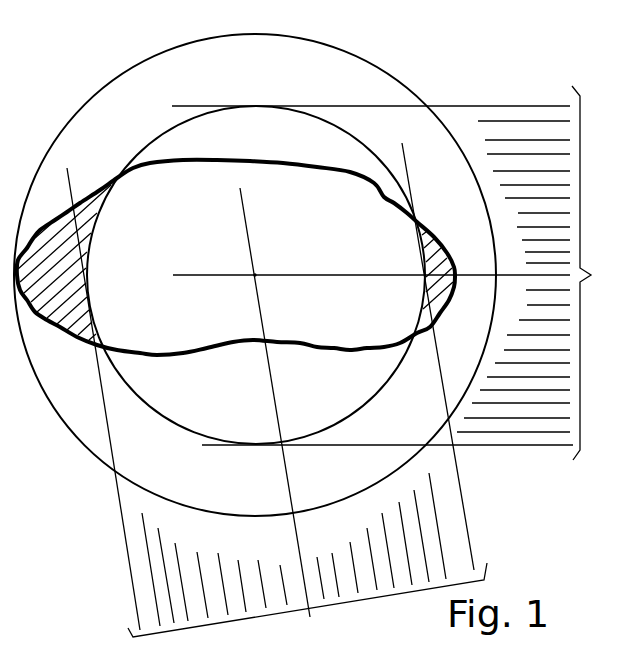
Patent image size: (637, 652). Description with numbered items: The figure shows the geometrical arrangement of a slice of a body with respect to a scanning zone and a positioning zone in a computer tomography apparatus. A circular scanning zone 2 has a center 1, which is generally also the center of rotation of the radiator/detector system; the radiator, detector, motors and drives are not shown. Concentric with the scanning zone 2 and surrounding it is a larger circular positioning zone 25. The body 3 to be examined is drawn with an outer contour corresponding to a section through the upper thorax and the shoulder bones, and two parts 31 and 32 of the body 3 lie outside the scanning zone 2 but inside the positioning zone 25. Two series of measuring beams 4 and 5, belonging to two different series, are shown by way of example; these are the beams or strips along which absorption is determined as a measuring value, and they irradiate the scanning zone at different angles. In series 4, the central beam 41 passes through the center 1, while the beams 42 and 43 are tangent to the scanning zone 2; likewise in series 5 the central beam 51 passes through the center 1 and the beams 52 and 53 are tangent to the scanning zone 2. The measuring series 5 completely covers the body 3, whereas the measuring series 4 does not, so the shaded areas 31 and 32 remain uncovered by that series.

The center 1 is at (255, 275).
The scanning zone 2 is at (350, 132).
The positioning zone 25 is at (374, 63).
The body 3 is at (267, 163).
The part of the body 31 is at (437, 293).
The part of the body 32 is at (65, 310).
The measuring beams 4 is at (311, 610).
The central beam 41 is at (296, 538).
The measuring beam 42 is at (125, 538).
The measuring beam 43 is at (455, 460).
The measuring beams 5 is at (531, 273).
The central beam 51 is at (504, 275).
The measuring beam 52 is at (502, 445).
The measuring beam 53 is at (445, 105).